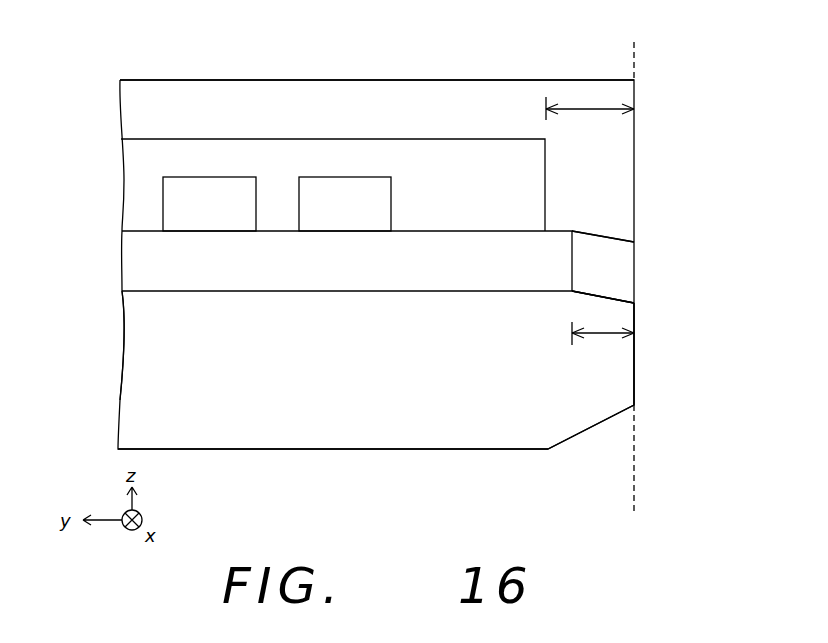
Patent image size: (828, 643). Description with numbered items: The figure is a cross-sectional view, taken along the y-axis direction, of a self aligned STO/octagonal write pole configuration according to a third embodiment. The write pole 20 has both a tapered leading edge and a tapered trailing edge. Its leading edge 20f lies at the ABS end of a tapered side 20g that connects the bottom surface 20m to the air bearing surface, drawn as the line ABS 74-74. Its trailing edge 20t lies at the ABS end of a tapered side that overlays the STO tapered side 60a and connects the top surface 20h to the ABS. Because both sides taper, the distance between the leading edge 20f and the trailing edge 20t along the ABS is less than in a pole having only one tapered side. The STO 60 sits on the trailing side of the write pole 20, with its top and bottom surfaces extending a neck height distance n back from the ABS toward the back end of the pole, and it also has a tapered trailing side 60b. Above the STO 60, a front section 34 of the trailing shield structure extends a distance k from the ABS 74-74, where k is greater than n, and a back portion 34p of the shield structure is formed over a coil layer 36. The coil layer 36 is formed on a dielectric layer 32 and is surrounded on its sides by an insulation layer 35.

The write pole 20 is at (144, 407).
The leading edge 20f is at (634, 405).
The tapered side 20g is at (597, 425).
The top surface 20h is at (157, 292).
The bottom surface 20m is at (360, 450).
The trailing edge 20t is at (634, 303).
The dielectric layer 32 is at (138, 262).
The front section of trailing shield structure 34 is at (615, 181).
The back portion of trailing shield structure 34p is at (138, 104).
The insulation layer 35 is at (138, 158).
The coil layer 36 is at (324, 213).
The STO 60 is at (615, 257).
The STO tapered side 60a is at (606, 292).
The tapered trailing side of STO 60b is at (604, 233).
The ABS 74 is at (634, 42).
The distance k is at (590, 99).
The neck height distance n is at (603, 325).